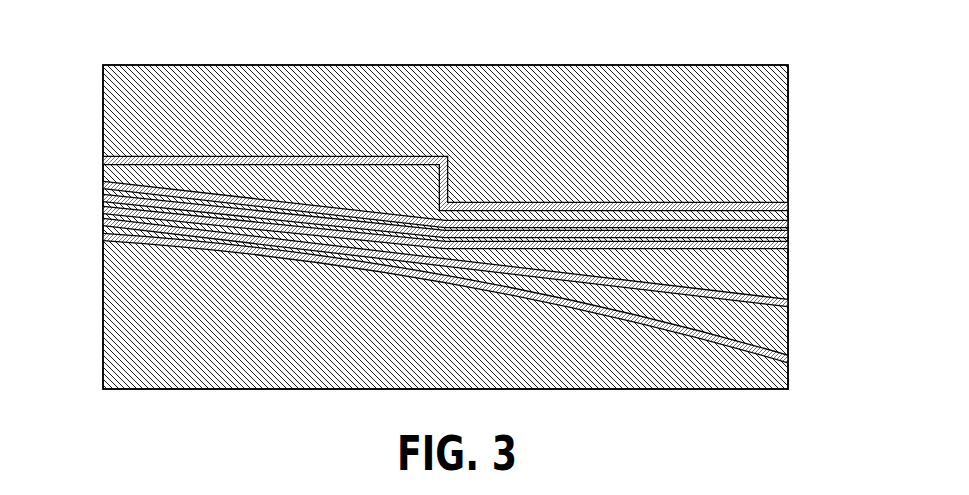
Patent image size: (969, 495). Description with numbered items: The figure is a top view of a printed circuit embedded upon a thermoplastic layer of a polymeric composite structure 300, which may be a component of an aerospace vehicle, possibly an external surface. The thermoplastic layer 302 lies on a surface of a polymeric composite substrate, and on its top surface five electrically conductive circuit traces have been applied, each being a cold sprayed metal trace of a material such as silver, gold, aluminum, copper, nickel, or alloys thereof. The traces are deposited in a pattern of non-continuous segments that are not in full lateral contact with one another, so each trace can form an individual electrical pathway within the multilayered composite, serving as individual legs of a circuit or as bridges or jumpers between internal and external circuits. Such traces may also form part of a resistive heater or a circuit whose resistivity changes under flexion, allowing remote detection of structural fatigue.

The polymeric composite structure 300 is at (121, 44).
The thermoplastic layer 302 is at (586, 90).